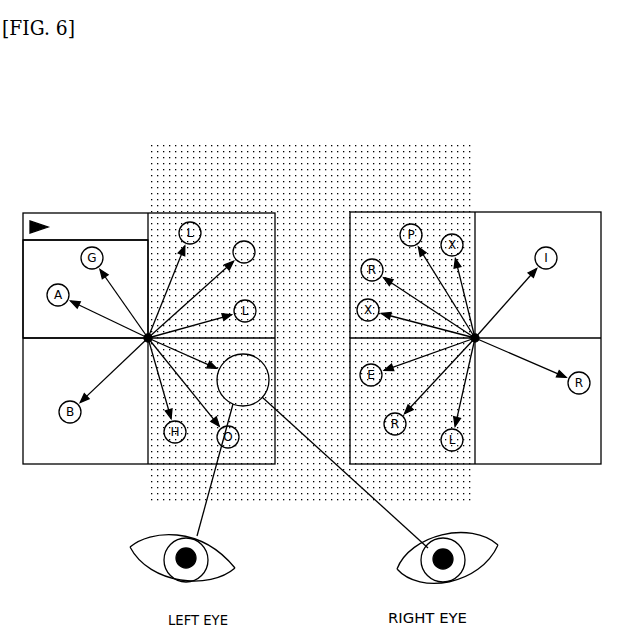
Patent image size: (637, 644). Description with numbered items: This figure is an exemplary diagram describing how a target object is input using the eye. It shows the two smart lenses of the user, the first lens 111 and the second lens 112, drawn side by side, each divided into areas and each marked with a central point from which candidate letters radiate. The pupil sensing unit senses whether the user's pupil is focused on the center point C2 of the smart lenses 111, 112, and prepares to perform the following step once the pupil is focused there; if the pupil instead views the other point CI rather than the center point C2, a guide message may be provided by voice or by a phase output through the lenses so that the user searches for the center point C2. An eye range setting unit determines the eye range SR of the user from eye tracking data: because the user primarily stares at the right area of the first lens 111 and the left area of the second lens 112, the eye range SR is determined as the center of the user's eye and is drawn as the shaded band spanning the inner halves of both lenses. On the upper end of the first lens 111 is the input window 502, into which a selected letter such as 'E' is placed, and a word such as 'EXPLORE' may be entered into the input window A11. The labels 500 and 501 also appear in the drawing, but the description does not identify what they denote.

The first lens 111 is at (68, 464).
The second lens 112 is at (560, 212).
The input window 502 is at (65, 212).
The input window A11 is at (125, 212).
The object (E) 500 is at (244, 241).
The virtual object (P) 501 is at (262, 365).
The eye range SR is at (418, 160).
The other point CI is at (145, 340).
The center point C2 is at (478, 342).